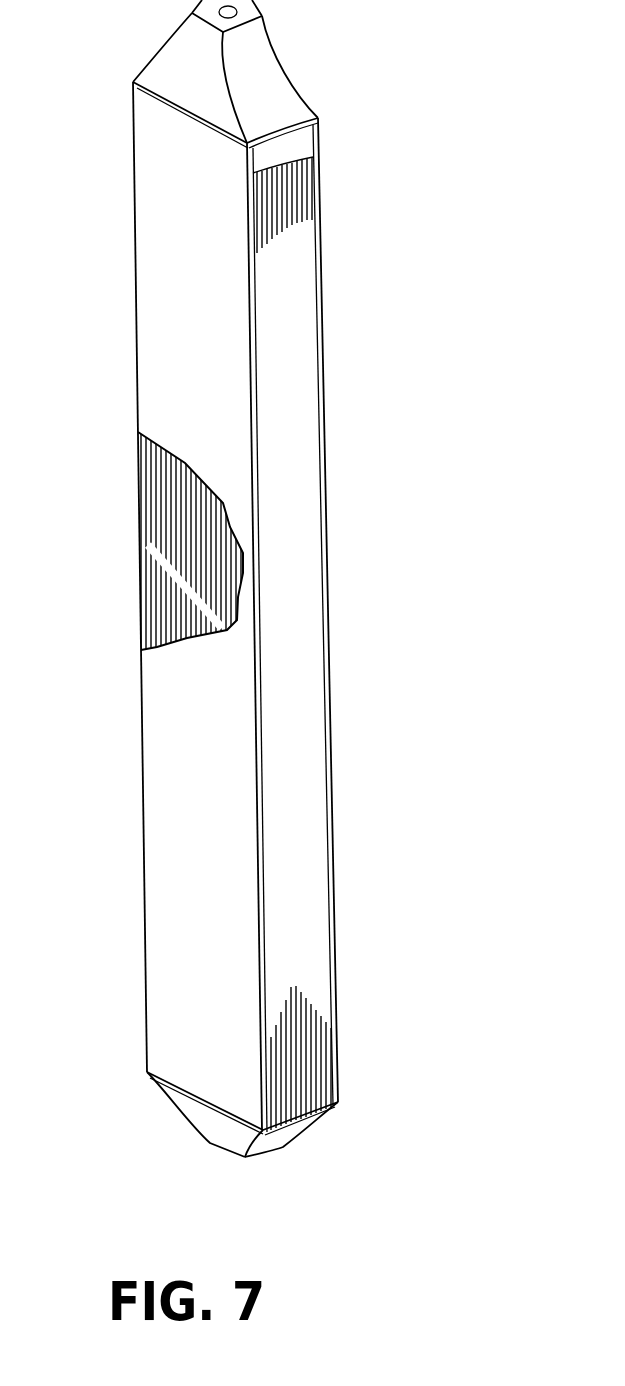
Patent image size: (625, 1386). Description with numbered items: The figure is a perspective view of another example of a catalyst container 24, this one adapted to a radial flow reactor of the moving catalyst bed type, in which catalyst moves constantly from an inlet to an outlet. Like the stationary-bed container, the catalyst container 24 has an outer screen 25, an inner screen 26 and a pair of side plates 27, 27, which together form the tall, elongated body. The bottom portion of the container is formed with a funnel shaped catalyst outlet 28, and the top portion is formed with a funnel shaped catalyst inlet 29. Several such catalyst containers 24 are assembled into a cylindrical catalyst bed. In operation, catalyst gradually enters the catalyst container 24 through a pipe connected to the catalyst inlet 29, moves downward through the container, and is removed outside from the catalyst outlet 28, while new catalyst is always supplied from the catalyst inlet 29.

The catalyst container 24 is at (368, 352).
The outer screen 25 is at (133, 193).
The inner screen 26 is at (303, 206).
The side plates 27 is at (182, 745).
The catalyst outlet 28 is at (217, 1128).
The catalyst inlet 29 is at (252, 48).